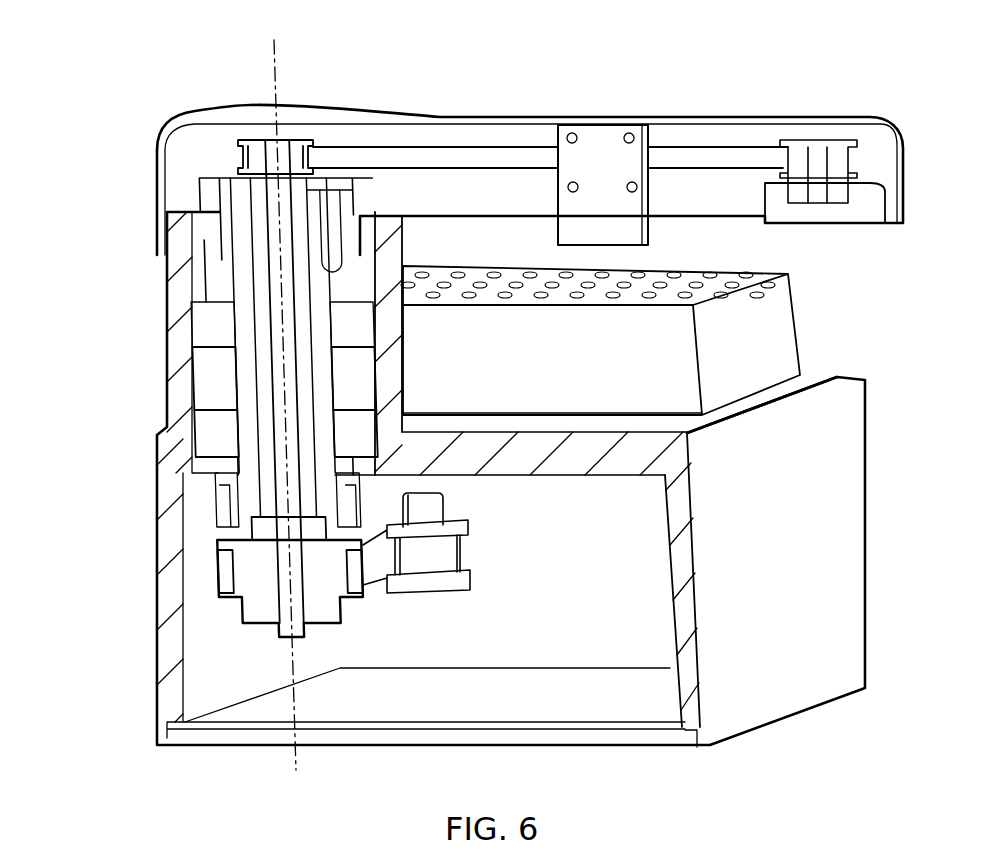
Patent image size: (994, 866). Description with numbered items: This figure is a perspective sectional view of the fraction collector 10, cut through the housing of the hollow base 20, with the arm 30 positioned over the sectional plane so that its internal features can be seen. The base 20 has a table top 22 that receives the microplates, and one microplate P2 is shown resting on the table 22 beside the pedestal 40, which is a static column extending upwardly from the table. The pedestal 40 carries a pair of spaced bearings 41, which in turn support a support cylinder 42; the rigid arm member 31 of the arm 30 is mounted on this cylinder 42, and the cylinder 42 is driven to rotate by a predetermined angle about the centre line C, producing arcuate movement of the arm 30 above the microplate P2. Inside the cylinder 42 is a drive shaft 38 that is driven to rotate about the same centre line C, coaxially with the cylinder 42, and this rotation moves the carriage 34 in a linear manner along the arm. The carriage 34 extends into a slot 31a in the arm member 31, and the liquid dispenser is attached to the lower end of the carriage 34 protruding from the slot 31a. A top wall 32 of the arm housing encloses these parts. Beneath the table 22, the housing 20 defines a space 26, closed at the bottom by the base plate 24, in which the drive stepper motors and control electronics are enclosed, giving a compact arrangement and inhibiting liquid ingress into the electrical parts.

The fraction collector 10 is at (98, 183).
The hollow base 20 is at (165, 645).
The table top 22 is at (807, 383).
The base plate 24 is at (272, 707).
The space 26 is at (582, 598).
The arm 30 is at (718, 100).
The arm member 31 is at (441, 175).
The slot 31a is at (493, 180).
The cover top wall 32 is at (176, 123).
The carriage 34 is at (598, 165).
The drive shaft 38 is at (278, 403).
The pedestal 40 is at (167, 288).
The bearings 41 is at (205, 327).
The support cylinder 42 is at (218, 277).
The microplate P2 is at (800, 337).
The centre line C is at (279, 391).